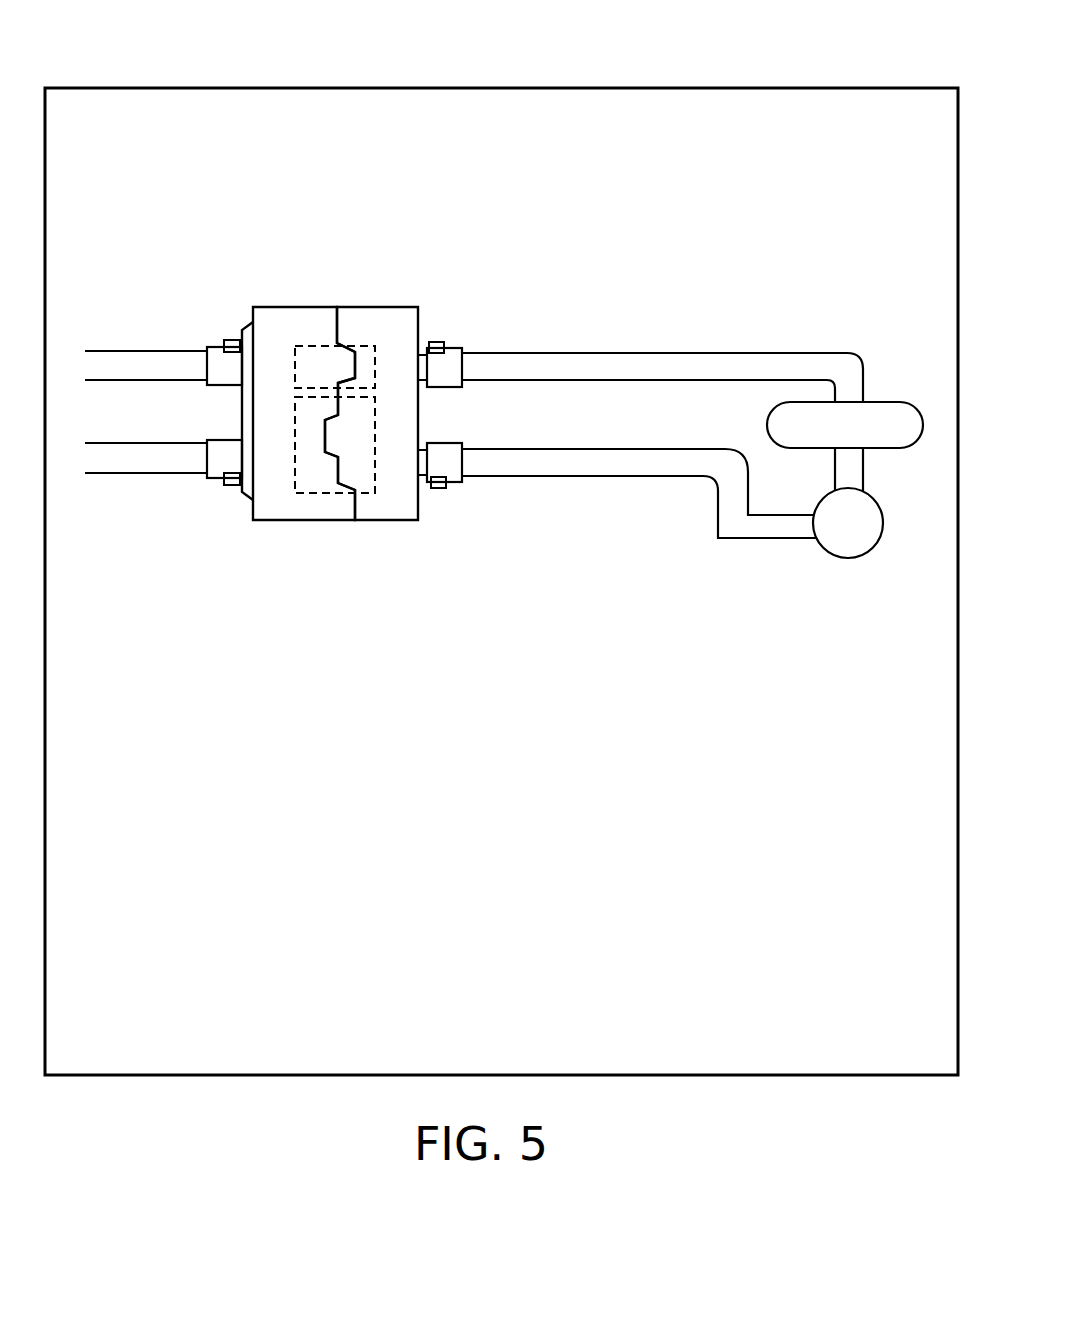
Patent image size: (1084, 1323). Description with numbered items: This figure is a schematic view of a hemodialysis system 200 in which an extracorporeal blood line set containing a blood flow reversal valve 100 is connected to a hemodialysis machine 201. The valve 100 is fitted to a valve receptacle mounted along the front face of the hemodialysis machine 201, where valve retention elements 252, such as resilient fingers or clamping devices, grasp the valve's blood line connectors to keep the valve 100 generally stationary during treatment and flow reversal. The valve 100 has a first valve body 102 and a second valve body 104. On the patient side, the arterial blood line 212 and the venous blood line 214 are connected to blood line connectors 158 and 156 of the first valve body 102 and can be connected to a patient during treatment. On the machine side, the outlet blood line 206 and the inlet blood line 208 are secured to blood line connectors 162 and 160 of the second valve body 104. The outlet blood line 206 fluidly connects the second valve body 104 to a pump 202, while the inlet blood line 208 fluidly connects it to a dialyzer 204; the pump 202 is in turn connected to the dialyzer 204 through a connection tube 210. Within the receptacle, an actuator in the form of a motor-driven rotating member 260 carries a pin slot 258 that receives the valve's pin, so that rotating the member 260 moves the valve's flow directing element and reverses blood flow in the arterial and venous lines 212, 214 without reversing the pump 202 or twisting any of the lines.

The hemodialysis system 200 is at (582, 56).
The hemodialysis machine 201 is at (193, 992).
The blood flow reversal valve 100 is at (402, 256).
The first valve body 102 is at (253, 307).
The second valve body 104 is at (420, 322).
The blood line connector 156 is at (208, 347).
The blood line connector 158 is at (215, 480).
The blood line connector 160 is at (457, 348).
The blood line connector 162 is at (452, 482).
The valve retention element 252 is at (237, 340).
The pin slot 258 is at (312, 384).
The rotating member 260 is at (315, 485).
The venous blood line 214 is at (142, 352).
The arterial blood line 212 is at (162, 476).
The inlet blood line 208 is at (720, 353).
The outlet blood line 206 is at (557, 476).
The connection tube 210 is at (863, 463).
The dialyzer 204 is at (890, 402).
The pump 202 is at (848, 560).